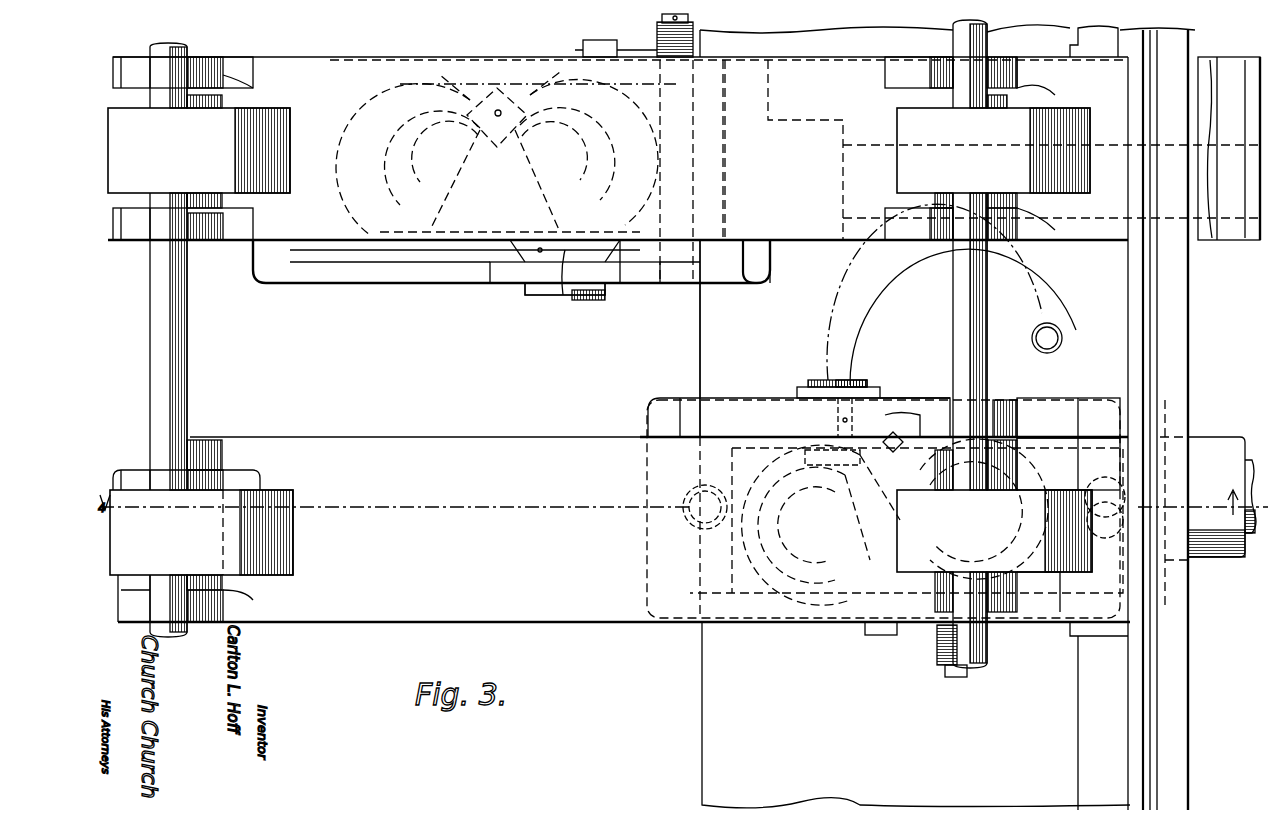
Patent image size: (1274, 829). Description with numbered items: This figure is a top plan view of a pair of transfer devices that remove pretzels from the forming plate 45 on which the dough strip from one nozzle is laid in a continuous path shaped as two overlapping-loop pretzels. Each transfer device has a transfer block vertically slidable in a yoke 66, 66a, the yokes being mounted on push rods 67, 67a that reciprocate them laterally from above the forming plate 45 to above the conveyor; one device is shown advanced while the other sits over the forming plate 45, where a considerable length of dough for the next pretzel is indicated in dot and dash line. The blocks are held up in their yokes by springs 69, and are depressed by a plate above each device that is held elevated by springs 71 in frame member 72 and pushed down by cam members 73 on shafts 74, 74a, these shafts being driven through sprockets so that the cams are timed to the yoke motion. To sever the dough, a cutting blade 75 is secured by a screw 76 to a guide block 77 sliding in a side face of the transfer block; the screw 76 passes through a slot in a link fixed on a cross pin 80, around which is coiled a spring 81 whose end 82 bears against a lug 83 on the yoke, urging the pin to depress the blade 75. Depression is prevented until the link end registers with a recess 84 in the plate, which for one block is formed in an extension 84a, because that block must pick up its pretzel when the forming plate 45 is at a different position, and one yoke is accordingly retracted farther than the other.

The shaft 74 is at (180, 53).
The cam member 73 is at (199, 150).
The shaft 74a is at (990, 40).
The push rod 67a is at (828, 243).
The recess 84 is at (1228, 200).
The extension 84a is at (1250, 250).
The cutting blade 75 is at (520, 295).
The guide block 77 is at (565, 295).
The yoke 66a is at (640, 283).
The cross pin 80 is at (686, 283).
The screw 76 is at (885, 395).
The yoke 66 is at (1035, 404).
The spring 71 is at (1102, 492).
The push rod 67 is at (1250, 460).
The spring 69 is at (1003, 540).
The frame member 72 is at (1192, 618).
The lug 83 is at (872, 640).
The spring end 82 is at (905, 636).
The spring 81 is at (935, 655).
The forming plate 45 is at (916, 716).